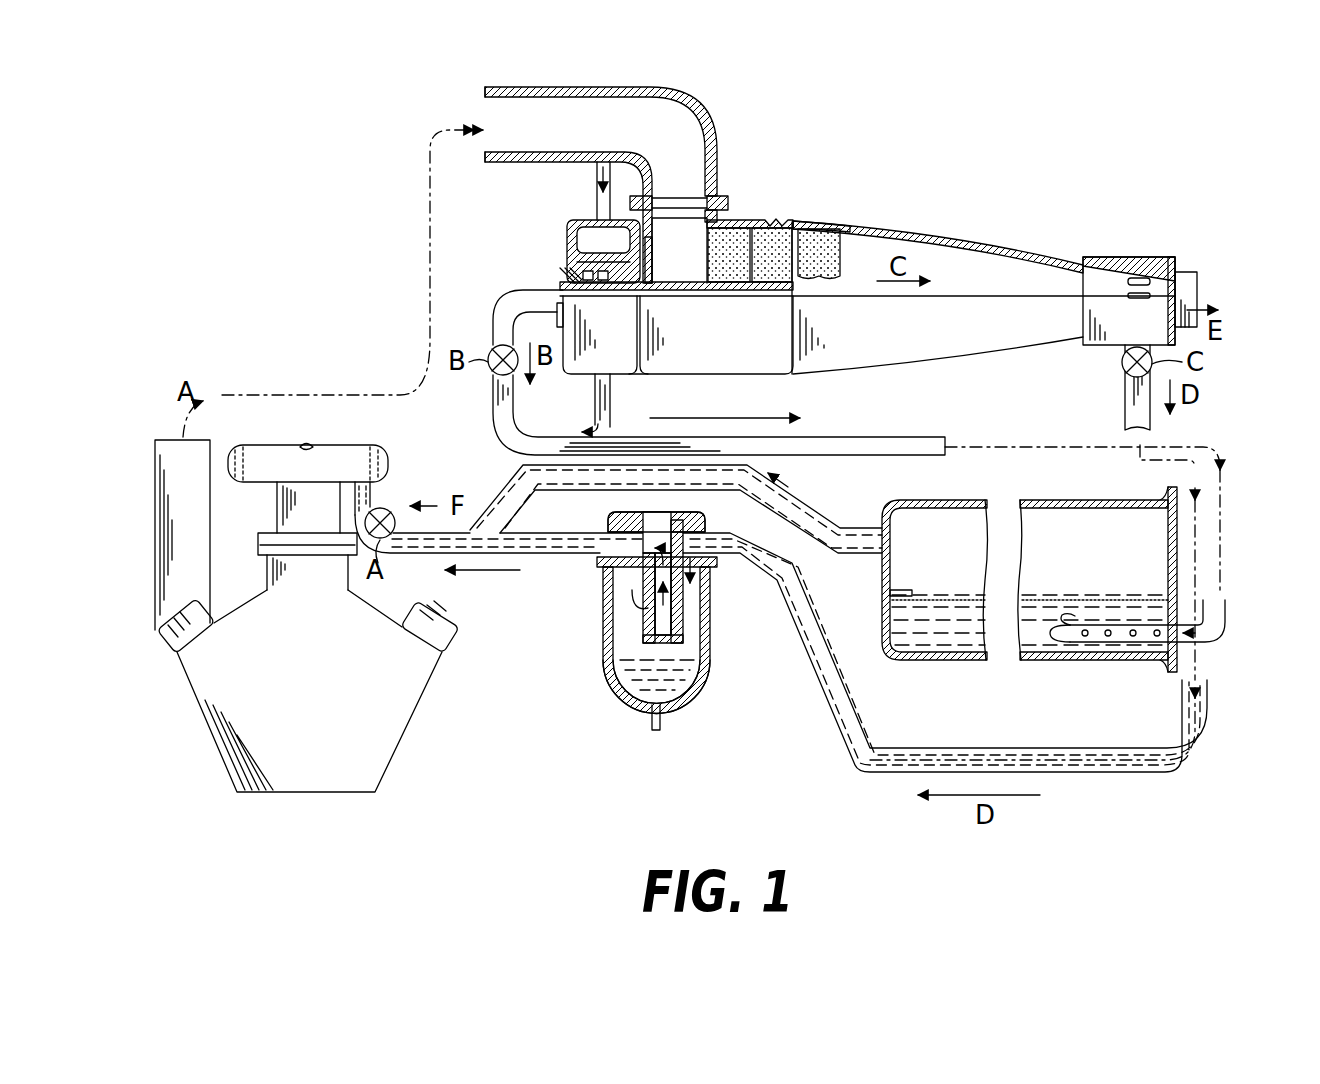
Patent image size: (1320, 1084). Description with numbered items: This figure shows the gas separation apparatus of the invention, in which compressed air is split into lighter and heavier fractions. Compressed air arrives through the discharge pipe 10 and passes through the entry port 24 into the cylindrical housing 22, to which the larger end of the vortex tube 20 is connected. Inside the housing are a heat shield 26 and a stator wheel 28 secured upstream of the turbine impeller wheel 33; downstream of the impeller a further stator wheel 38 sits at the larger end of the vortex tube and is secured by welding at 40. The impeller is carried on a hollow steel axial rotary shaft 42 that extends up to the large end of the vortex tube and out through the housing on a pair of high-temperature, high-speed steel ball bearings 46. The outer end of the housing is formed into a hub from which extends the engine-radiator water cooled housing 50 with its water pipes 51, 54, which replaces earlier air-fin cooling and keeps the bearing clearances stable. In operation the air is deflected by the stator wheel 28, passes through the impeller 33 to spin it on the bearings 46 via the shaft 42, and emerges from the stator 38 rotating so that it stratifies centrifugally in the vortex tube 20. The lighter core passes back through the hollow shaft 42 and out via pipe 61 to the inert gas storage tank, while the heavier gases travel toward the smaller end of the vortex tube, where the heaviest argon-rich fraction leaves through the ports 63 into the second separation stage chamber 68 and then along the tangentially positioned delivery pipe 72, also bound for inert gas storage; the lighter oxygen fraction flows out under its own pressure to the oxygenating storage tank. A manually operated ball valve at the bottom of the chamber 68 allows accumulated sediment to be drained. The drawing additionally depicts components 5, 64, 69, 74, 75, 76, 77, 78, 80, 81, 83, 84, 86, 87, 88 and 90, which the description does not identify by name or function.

The flask 5 is at (308, 637).
The discharge pipe 10 is at (182, 535).
The vortex tube 20 is at (948, 230).
The cylindrical housing 22 is at (738, 224).
The entry port 24 is at (653, 205).
The heat shield 26 is at (658, 270).
The stator wheel 28 is at (770, 224).
The turbine impeller wheel 33 is at (760, 291).
The further stator wheel 38 is at (846, 236).
The weld 40 is at (810, 222).
The hollow steel axial rotary shaft 42 is at (690, 290).
The steel ball bearings 46 is at (562, 278).
The water cooled housing 50 is at (567, 232).
The water pipe 51 is at (595, 178).
The water pipe 54 is at (719, 372).
The pipe 61 is at (957, 446).
The ports 63 is at (1145, 280).
The tank 64 is at (1115, 500).
The second separation stage chamber 68 is at (1105, 257).
The separator vessel 69 is at (605, 670).
The delivery pipe 72 is at (1125, 415).
The liquid level 74 is at (958, 592).
The float 75 is at (933, 600).
The inlet line 76 is at (857, 556).
The line 77 is at (580, 553).
The vessel wall 78 is at (627, 695).
The inner tube 80 is at (643, 625).
The inner tube bore 81 is at (618, 599).
The drain 83 is at (663, 726).
The cover 84 is at (622, 514).
The vessel bottom 86 is at (690, 702).
The cover 87 is at (645, 512).
The cap 88 is at (392, 466).
The connecting line 90 is at (362, 447).